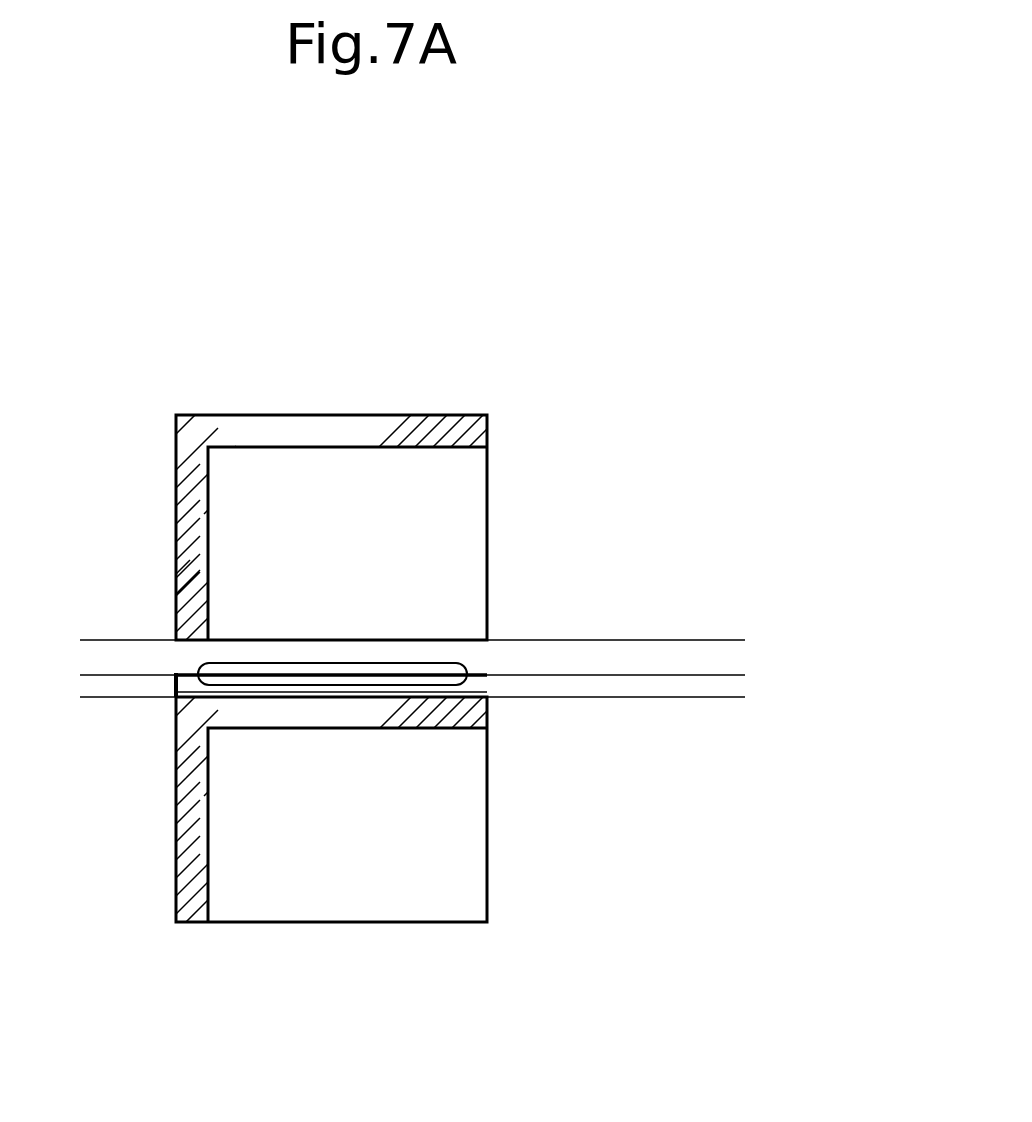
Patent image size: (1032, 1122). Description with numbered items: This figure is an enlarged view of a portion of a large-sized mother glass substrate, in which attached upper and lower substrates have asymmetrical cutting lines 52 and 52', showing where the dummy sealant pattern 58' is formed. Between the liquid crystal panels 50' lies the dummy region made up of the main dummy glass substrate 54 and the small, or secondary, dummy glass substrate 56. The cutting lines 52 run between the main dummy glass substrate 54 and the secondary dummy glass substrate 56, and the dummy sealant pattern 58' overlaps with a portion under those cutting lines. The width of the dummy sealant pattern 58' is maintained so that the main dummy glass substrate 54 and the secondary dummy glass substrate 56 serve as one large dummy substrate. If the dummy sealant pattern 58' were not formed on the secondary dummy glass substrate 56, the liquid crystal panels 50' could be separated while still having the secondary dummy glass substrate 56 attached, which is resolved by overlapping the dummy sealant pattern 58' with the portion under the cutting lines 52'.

The liquid crystal panel 50' is at (336, 669).
The cutting line 52 is at (490, 639).
The cutting line 52' is at (468, 693).
The main dummy glass substrate 54 is at (477, 657).
The secondary dummy glass substrate 56 is at (490, 690).
The dummy sealant pattern 58' is at (265, 718).